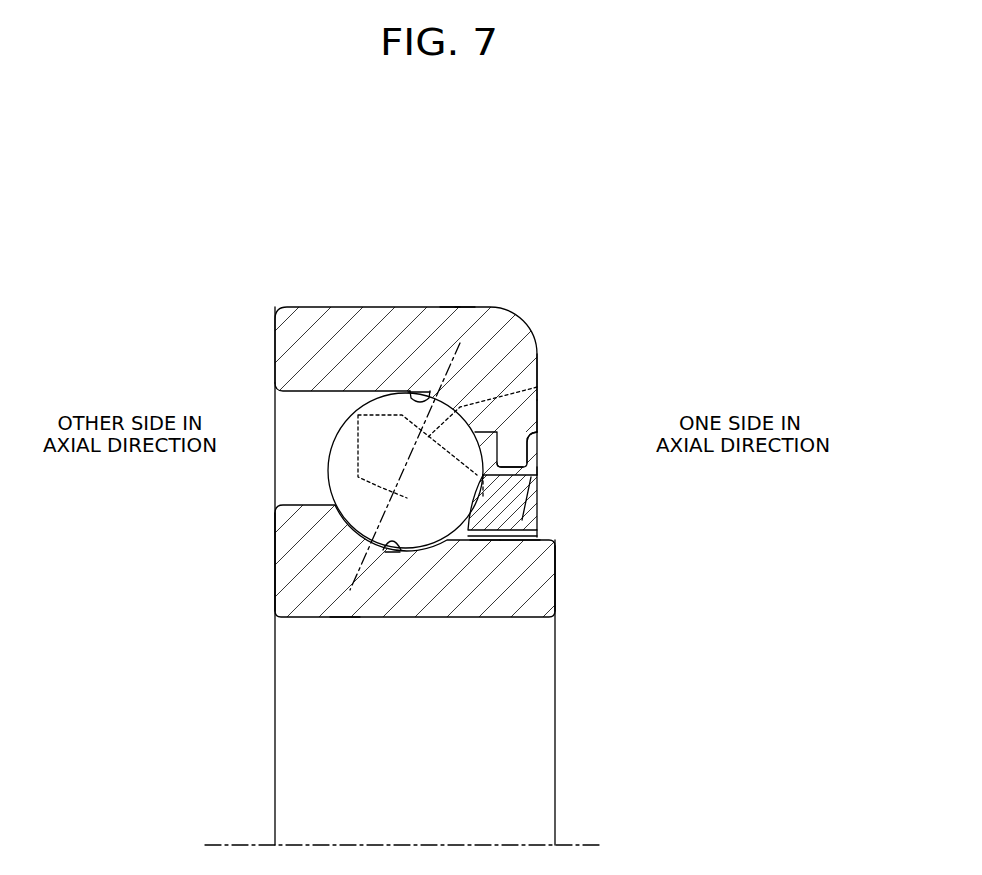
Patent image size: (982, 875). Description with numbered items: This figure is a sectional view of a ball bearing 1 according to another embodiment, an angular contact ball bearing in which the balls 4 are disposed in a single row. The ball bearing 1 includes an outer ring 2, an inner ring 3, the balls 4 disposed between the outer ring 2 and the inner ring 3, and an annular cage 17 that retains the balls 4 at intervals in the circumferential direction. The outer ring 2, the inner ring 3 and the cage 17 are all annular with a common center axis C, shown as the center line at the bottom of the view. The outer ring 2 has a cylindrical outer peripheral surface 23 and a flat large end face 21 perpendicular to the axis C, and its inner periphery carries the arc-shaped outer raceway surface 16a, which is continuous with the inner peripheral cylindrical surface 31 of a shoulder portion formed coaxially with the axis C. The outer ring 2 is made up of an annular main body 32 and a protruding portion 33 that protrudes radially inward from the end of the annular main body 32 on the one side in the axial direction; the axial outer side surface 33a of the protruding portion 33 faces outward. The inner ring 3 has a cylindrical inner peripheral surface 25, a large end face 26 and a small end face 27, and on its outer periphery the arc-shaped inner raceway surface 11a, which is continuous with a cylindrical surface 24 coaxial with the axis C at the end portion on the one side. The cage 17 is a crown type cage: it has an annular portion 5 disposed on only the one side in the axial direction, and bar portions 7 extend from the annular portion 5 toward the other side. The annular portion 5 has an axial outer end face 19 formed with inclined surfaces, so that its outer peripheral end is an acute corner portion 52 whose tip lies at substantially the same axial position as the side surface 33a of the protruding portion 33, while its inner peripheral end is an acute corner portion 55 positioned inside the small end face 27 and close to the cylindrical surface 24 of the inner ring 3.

The ball bearing 1 is at (446, 248).
The outer ring 2 is at (362, 306).
The inner ring 3 is at (442, 622).
The balls 4 is at (389, 400).
The annular portion 5 is at (520, 515).
The bar portions 7 is at (537, 387).
The inner raceway surface 11a is at (401, 560).
The outer raceway surface 16a is at (417, 400).
The cage 17 is at (509, 556).
The axial outer end face 19 is at (532, 496).
The large end face 21 is at (540, 373).
The outer peripheral surface 23 is at (462, 350).
The cylindrical surface 24 is at (493, 548).
The inner peripheral surface 25 is at (346, 618).
The large end face 26 is at (275, 547).
The small end face 27 is at (553, 579).
The inner peripheral cylindrical surface 31 is at (540, 414).
The annular main body 32 is at (460, 307).
The protruding portion 33 is at (512, 458).
The side surface 33a is at (533, 442).
The corner portion 52 is at (540, 471).
The corner portion 55 is at (540, 531).
The axis C is at (230, 845).